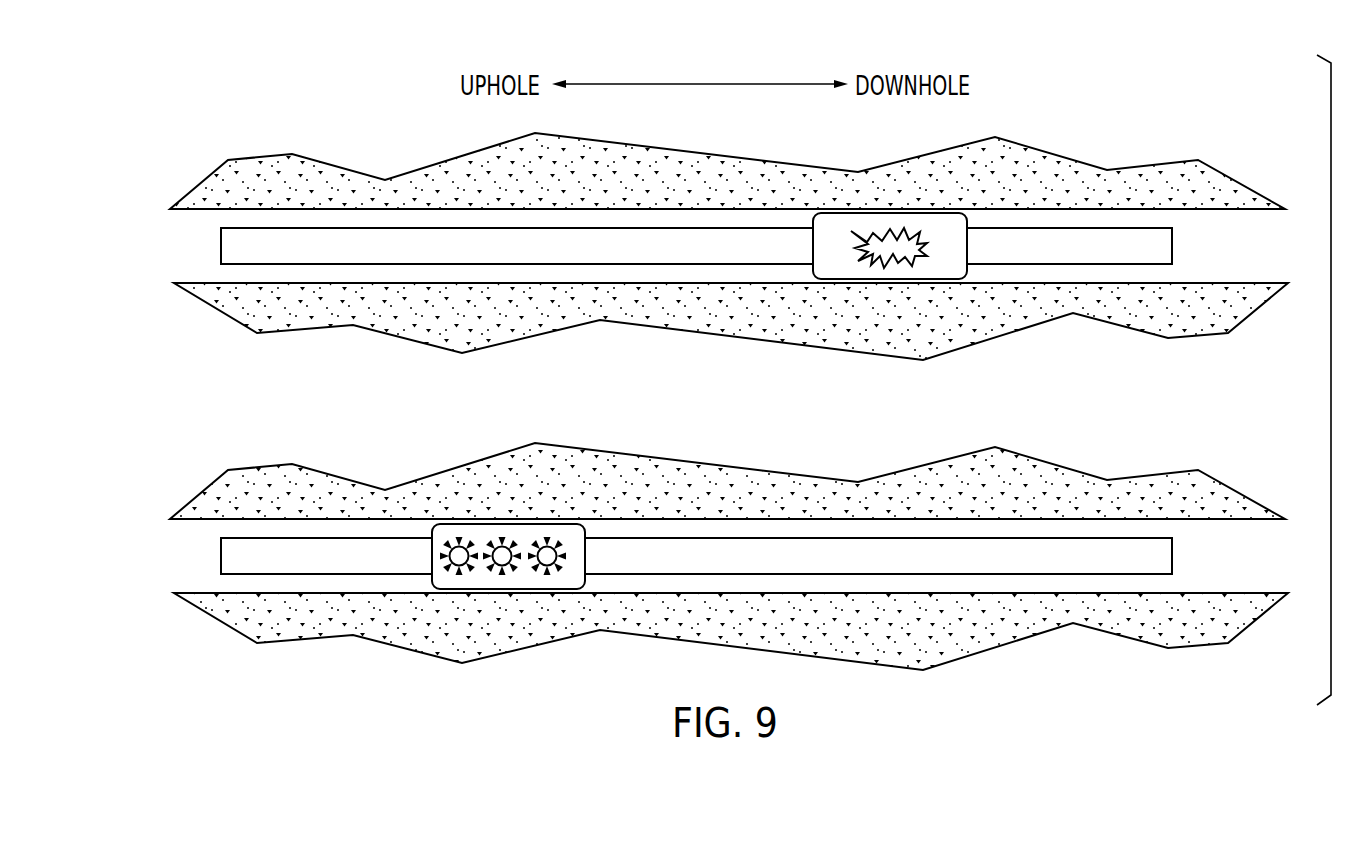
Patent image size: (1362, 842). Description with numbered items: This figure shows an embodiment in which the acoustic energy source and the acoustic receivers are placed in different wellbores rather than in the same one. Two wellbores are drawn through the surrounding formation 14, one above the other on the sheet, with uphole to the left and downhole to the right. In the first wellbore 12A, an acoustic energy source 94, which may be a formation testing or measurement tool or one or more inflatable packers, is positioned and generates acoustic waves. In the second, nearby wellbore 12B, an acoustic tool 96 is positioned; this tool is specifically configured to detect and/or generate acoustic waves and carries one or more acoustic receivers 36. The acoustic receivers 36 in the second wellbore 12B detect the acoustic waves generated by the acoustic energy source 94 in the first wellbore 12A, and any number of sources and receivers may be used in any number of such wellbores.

The subterranean formation 14 is at (557, 187).
The first wellbore 12A is at (433, 283).
The second wellbore 12B is at (1045, 595).
The acoustic energy source 94 is at (837, 263).
The acoustic tool 96 is at (446, 583).
The acoustic receivers 36 is at (547, 572).